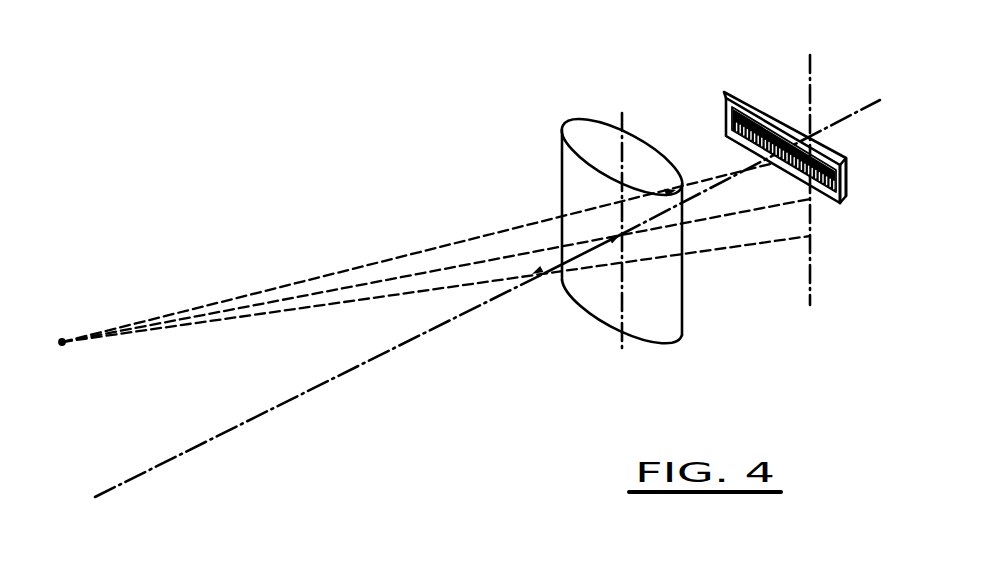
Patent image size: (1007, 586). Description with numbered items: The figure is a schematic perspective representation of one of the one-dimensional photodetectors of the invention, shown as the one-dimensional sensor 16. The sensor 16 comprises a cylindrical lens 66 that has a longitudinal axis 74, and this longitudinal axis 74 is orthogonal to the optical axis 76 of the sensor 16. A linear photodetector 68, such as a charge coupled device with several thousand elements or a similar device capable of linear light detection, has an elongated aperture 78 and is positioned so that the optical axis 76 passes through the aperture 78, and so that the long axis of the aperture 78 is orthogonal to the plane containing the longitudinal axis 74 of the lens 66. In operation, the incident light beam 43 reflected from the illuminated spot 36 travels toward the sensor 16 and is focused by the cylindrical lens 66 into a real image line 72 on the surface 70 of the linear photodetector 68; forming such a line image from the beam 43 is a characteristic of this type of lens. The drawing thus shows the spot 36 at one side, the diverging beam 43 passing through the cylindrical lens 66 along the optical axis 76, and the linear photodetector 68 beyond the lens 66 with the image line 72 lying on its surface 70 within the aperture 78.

The one-dimensional sensor 16 is at (583, 103).
The illuminated spot 36 is at (63, 340).
The incident light beam 43 is at (340, 302).
The cylindrical lens 66 is at (683, 313).
The linear photodetector 68 is at (723, 96).
The surface 70 is at (848, 182).
The real image line 72 is at (812, 88).
The longitudinal axis 74 is at (622, 343).
The optical axis 76 is at (290, 399).
The elongated aperture 78 is at (724, 122).